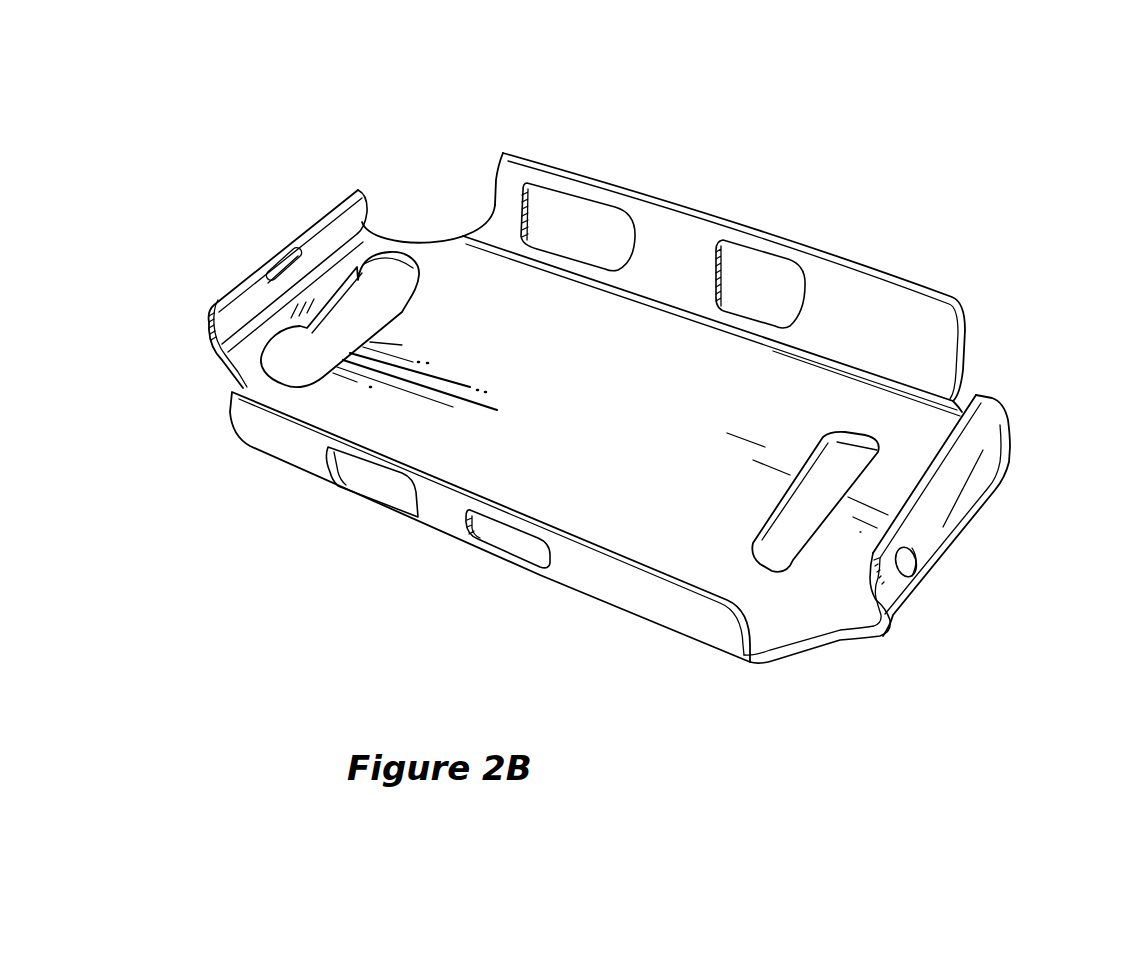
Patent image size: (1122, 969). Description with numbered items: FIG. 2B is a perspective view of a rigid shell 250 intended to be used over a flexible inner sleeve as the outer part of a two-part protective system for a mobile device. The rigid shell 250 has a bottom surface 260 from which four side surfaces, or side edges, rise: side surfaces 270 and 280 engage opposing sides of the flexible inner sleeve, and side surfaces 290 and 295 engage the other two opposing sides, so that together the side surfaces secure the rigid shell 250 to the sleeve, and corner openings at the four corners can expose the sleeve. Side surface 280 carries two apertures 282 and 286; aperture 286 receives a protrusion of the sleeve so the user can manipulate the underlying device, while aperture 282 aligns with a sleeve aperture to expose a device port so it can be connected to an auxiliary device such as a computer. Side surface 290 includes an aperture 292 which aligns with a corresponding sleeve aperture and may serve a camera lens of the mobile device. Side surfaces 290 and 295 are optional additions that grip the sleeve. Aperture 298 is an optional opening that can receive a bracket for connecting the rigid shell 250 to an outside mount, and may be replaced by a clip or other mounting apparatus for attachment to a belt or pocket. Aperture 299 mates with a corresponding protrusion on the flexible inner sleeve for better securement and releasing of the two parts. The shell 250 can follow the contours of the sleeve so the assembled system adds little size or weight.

The rigid shell 250 is at (832, 162).
The bottom surface 260 is at (675, 415).
The side surface 270 is at (500, 177).
The side surface 280 is at (245, 425).
The aperture 282 is at (505, 540).
The aperture 286 is at (368, 483).
The side surface 290 is at (958, 492).
The aperture 292 is at (917, 560).
The side surface 295 is at (243, 280).
The aperture 298 is at (368, 287).
The aperture 299 is at (797, 540).